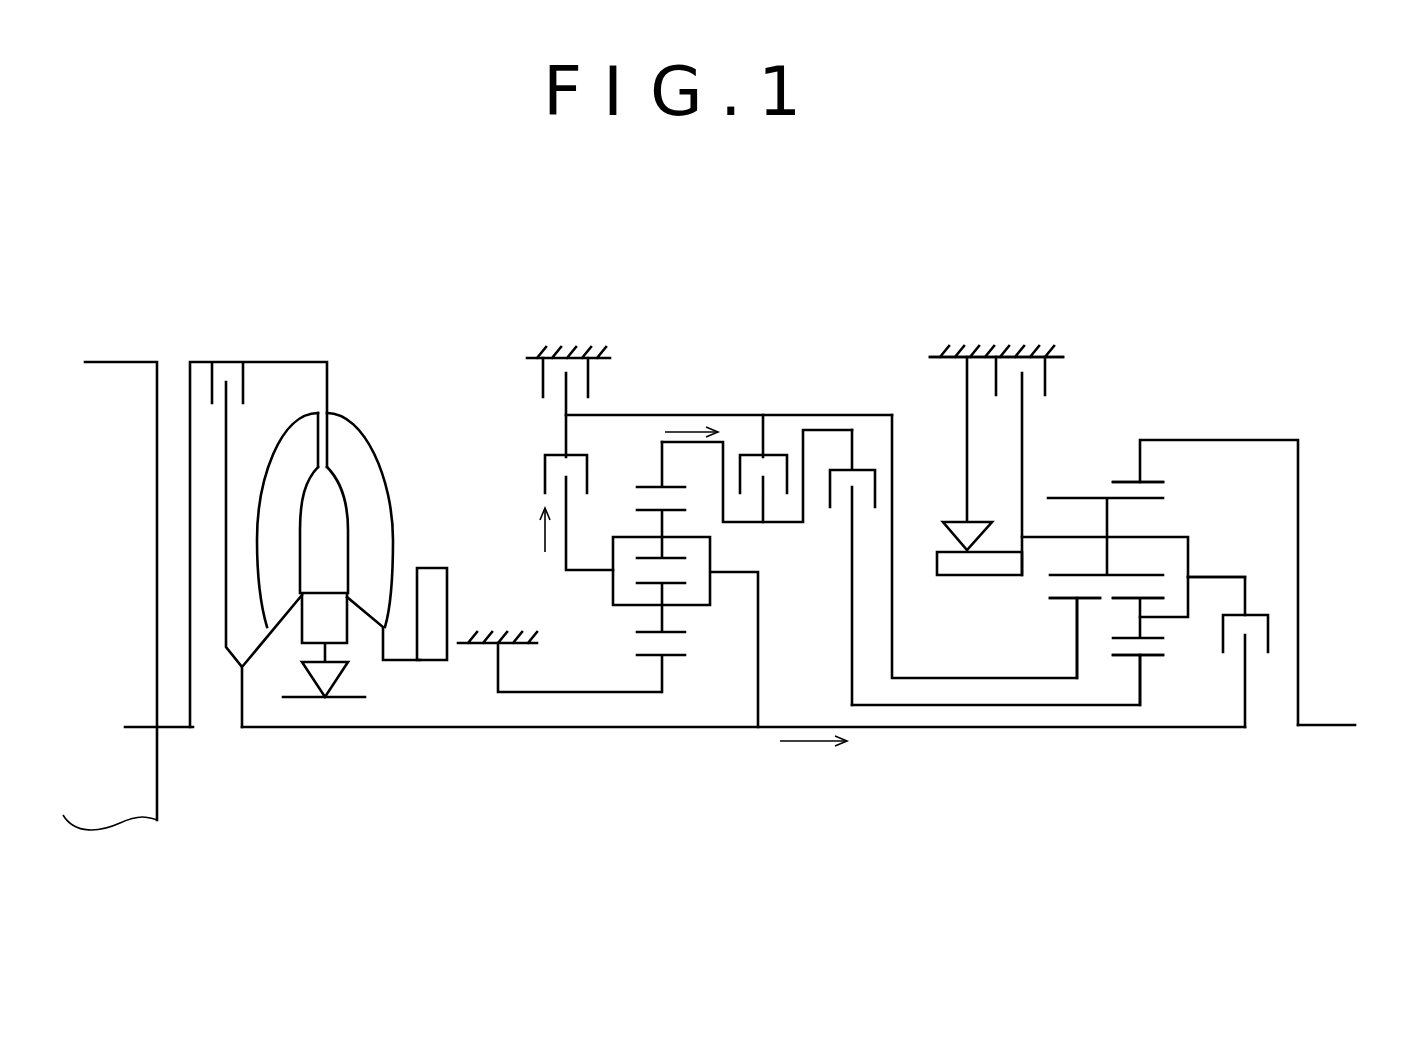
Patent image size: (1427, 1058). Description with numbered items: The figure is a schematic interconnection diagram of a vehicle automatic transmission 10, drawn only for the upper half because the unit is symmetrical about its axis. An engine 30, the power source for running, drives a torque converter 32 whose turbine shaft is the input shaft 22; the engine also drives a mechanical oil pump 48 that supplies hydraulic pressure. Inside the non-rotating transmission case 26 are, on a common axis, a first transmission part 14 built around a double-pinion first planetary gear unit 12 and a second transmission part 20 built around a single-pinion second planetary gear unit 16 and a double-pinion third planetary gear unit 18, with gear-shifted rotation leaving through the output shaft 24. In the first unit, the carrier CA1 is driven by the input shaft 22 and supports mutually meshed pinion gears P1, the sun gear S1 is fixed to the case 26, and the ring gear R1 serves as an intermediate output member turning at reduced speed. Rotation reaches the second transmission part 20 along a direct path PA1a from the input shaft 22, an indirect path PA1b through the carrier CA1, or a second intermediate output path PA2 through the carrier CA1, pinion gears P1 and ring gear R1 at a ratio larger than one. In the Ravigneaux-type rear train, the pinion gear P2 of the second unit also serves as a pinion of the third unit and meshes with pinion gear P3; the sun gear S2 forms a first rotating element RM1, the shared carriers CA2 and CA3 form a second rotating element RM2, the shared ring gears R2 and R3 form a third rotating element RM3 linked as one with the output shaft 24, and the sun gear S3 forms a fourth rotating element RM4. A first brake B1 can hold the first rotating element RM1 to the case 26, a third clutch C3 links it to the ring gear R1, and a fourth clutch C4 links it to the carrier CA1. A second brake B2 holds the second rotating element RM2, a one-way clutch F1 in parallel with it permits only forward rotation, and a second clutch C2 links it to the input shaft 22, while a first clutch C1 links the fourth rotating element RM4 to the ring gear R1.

The automatic transmission 10 is at (1212, 352).
The first planetary gear unit 12 is at (647, 458).
The first transmission part 14 is at (641, 752).
The second planetary gear unit 16 is at (1085, 475).
The third planetary gear unit 18 is at (1117, 468).
The second transmission part 20 is at (1145, 755).
The input shaft 22 is at (390, 728).
The output shaft 24 is at (1320, 725).
The transmission case 26 is at (487, 640).
The engine 30 is at (122, 382).
The torque converter 32 is at (353, 385).
The mechanical oil pump 48 is at (435, 590).
The first brake B1 is at (542, 377).
The second brake B2 is at (1046, 382).
The first clutch C1 is at (879, 478).
The second clutch C2 is at (1270, 633).
The third clutch C3 is at (739, 468).
The fourth clutch C4 is at (543, 478).
The one-way clutch F1 is at (972, 466).
The sun gear S1 is at (676, 657).
The sun gear S2 is at (1063, 599).
The sun gear S3 is at (1152, 657).
The pinion gears P1 is at (640, 512).
The pinion gear P2 is at (1066, 497).
The pinion gear P3 is at (1123, 638).
The ring gear R1 is at (680, 486).
The ring gear R2 is at (1200, 465).
The ring gear R3 is at (1148, 477).
The carrier CA1 is at (613, 583).
The carrier CA2 is at (1210, 576).
The carrier CA3 is at (1296, 555).
The first rotating element RM1 is at (965, 676).
The second rotating element RM2 is at (1158, 533).
The third rotating element RM3 is at (1260, 437).
The fourth rotating element RM4 is at (943, 707).
The direct path PA1a is at (817, 760).
The indirect path PA1b is at (508, 532).
The second intermediate output path PA2 is at (677, 430).